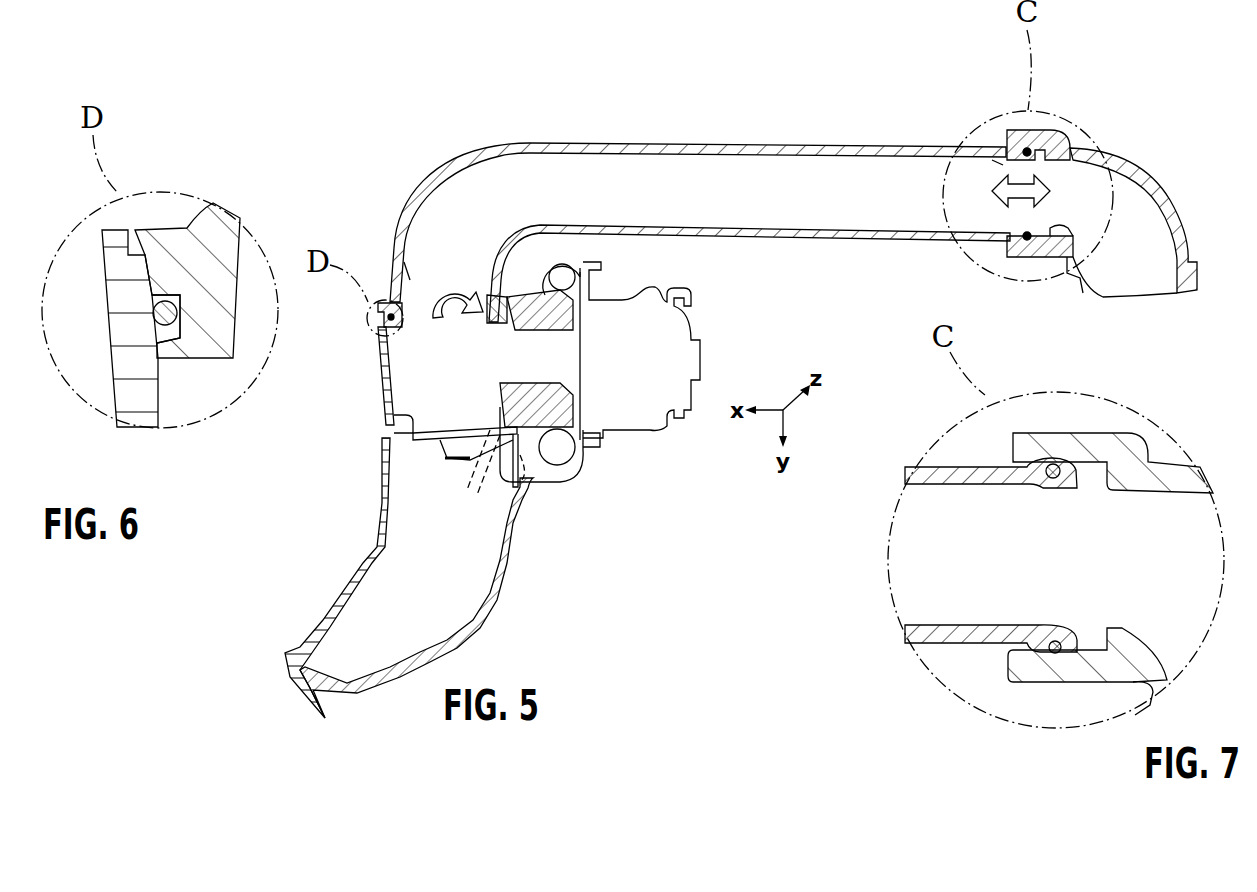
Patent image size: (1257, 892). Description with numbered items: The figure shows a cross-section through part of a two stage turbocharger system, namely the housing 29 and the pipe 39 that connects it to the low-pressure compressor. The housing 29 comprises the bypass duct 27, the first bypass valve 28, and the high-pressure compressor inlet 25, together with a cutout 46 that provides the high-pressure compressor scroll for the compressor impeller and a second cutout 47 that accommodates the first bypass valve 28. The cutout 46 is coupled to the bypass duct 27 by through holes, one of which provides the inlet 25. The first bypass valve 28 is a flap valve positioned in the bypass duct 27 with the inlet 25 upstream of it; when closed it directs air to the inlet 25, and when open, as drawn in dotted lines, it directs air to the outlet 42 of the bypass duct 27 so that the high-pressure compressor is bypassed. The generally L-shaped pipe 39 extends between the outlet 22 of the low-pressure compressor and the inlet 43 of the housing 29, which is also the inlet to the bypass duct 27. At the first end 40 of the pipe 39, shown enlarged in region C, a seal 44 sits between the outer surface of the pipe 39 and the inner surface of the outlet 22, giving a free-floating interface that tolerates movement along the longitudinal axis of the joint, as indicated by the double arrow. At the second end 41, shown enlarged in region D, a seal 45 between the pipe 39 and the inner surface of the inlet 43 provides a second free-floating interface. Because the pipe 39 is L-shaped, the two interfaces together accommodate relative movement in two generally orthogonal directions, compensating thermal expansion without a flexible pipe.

In FIG. 5, the outlet 22 is at (1135, 168).
In FIG. 7, the outlet 22 is at (1027, 670).
In FIG. 5, the inlet 25 is at (553, 365).
In FIG. 5, the bypass duct 27 is at (378, 478).
In FIG. 5, the first bypass valve 28 is at (522, 478).
In FIG. 5, the housing 29 is at (384, 375).
In FIG. 6, the housing 29 is at (122, 353).
In FIG. 5, the pipe 39 is at (722, 146).
In FIG. 6, the pipe 39 is at (220, 207).
In FIG. 7, the pipe 39 is at (950, 465).
In FIG. 5, the first end 40 is at (996, 158).
In FIG. 5, the second end 41 is at (436, 265).
In FIG. 6, the second end 41 is at (196, 336).
In FIG. 5, the outlet 42 is at (500, 603).
In FIG. 5, the inlet 43 is at (400, 272).
In FIG. 5, the seal 44 is at (1024, 146).
In FIG. 7, the seal 44 is at (1053, 464).
In FIG. 5, the seal 45 is at (384, 322).
In FIG. 6, the seal 45 is at (152, 310).
In FIG. 5, the cutout 46 is at (568, 266).
In FIG. 5, the second cutout 47 is at (396, 422).